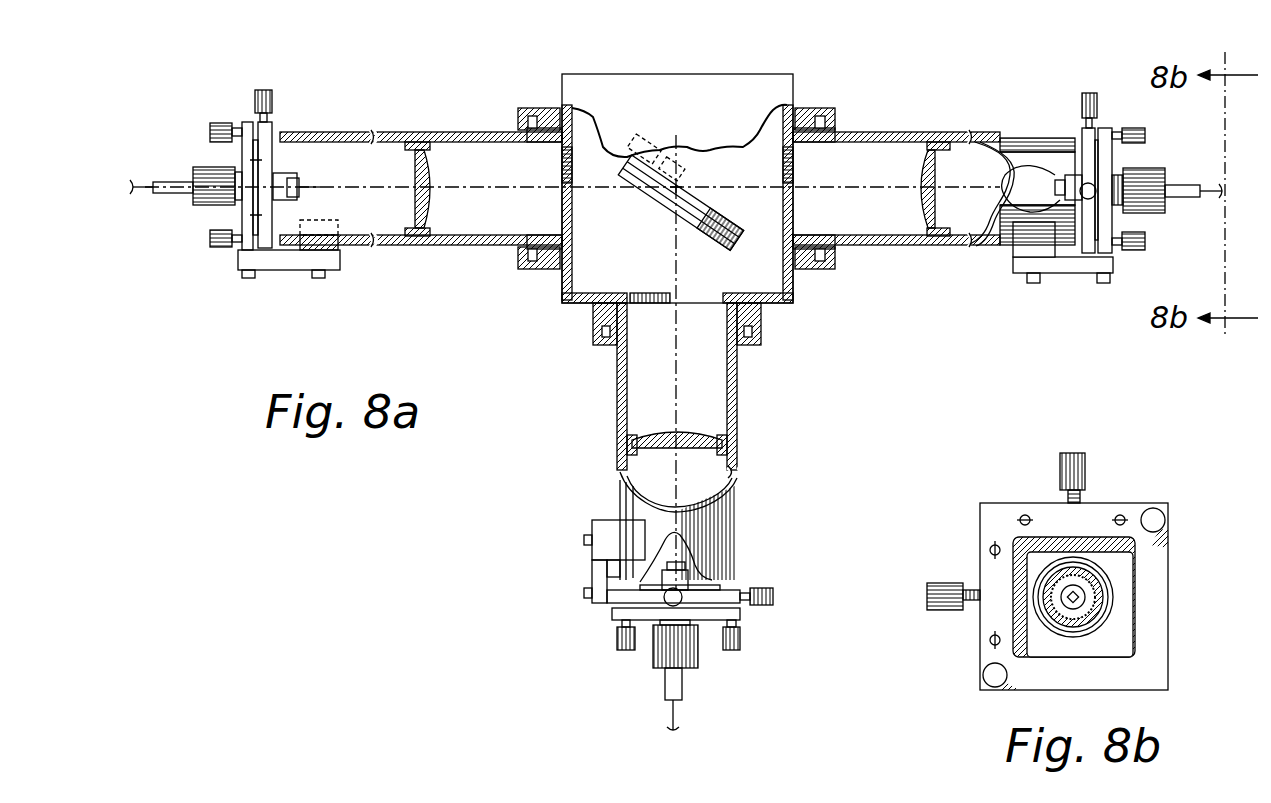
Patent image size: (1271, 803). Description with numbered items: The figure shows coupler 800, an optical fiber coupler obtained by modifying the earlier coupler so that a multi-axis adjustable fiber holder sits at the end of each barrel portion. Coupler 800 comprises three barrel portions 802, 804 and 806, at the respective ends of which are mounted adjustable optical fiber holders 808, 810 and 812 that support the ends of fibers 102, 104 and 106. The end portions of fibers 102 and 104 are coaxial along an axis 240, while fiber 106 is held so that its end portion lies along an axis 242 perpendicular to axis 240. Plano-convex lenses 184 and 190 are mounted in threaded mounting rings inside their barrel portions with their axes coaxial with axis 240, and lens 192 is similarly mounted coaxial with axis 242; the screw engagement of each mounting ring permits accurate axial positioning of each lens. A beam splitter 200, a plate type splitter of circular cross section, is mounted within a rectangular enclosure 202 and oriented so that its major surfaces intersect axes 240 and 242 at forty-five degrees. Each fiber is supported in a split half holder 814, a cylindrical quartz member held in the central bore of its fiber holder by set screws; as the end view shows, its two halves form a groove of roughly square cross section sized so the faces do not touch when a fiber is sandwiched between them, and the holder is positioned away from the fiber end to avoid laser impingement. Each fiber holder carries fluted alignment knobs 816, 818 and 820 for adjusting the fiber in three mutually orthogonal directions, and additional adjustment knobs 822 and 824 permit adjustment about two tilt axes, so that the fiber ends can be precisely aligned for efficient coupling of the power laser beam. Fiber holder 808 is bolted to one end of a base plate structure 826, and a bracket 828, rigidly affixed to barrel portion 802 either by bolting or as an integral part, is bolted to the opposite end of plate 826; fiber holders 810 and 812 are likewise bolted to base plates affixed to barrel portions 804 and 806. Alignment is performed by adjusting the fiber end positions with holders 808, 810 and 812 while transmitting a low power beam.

In FIG. 8a, the optical fiber 102 is at (140, 186).
In FIG. 8a, the optical fiber 104 is at (1210, 192).
In FIG. 8a, the optical fiber 106 is at (673, 710).
In FIG. 8a, the plano-convex lens 184 is at (925, 180).
In FIG. 8a, the plano-convex lens 190 is at (433, 170).
In FIG. 8a, the plano-convex lens 192 is at (656, 434).
In FIG. 8a, the beam splitter 200 is at (642, 176).
In FIG. 8a, the rectangular enclosure 202 is at (710, 78).
In FIG. 8a, the axis 240 is at (880, 186).
In FIG. 8a, the axis 242 is at (680, 392).
In FIG. 8a, the coupler 800 is at (503, 358).
In FIG. 8a, the barrel portion 802 is at (450, 131).
In FIG. 8a, the barrel portion 804 is at (918, 131).
In FIG. 8a, the barrel portion 806 is at (736, 442).
In FIG. 8a, the adjustable optical fiber holder 808 is at (245, 125).
In FIG. 8a, the adjustable optical fiber holder 810 is at (1105, 126).
In FIG. 8b, the adjustable optical fiber holder 810 is at (1074, 596).
In FIG. 8a, the adjustable optical fiber holder 812 is at (748, 616).
In FIG. 8a, the split half holder 814 is at (303, 178).
In FIG. 8b, the split half holder 814 is at (1078, 597).
In FIG. 8a, the fluted alignment knob 816 is at (668, 606).
In FIG. 8b, the fluted alignment knob 816 is at (945, 585).
In FIG. 8a, the fluted alignment knob 818 is at (260, 88).
In FIG. 8b, the fluted alignment knob 818 is at (1085, 464).
In FIG. 8a, the fluted alignment knob 820 is at (207, 204).
In FIG. 8b, the fluted alignment knob 820 is at (1062, 580).
In FIG. 8a, the adjustment knob 822 is at (212, 128).
In FIG. 8b, the adjustment knob 822 is at (1166, 518).
In FIG. 8a, the adjustment knob 824 is at (218, 250).
In FIG. 8b, the adjustment knob 824 is at (982, 670).
In FIG. 8a, the base plate structure 826 is at (290, 270).
In FIG. 8a, the bracket 828 is at (340, 252).